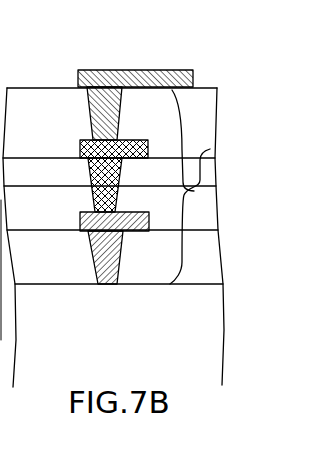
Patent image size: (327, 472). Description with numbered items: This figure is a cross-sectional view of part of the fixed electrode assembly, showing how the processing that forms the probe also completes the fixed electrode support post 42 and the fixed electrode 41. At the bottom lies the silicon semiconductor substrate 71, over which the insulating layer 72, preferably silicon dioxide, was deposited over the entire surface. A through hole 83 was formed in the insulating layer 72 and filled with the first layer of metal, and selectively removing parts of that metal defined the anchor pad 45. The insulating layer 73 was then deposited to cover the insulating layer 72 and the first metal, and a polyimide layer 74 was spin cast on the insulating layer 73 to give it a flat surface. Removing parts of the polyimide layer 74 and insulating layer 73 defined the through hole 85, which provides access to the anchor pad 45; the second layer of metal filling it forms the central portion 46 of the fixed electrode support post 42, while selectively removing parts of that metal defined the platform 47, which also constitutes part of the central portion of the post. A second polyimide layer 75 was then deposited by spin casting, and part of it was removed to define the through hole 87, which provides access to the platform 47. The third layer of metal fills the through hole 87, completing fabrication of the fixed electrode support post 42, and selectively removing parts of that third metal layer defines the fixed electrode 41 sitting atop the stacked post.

The fixed electrode 41 is at (114, 70).
The through hole 87 is at (90, 122).
The central portion 46 is at (90, 172).
The through hole 85 is at (92, 190).
The anchor pad 45 is at (80, 228).
The through hole 83 is at (92, 257).
The platform 47 is at (148, 152).
The fixed electrode support post 42 is at (210, 149).
The second polyimide layer 75 is at (22, 92).
The polyimide layer 74 is at (207, 170).
The insulating layer 73 is at (208, 210).
The insulating layer 72 is at (212, 252).
The silicon semiconductor substrate 71 is at (222, 331).